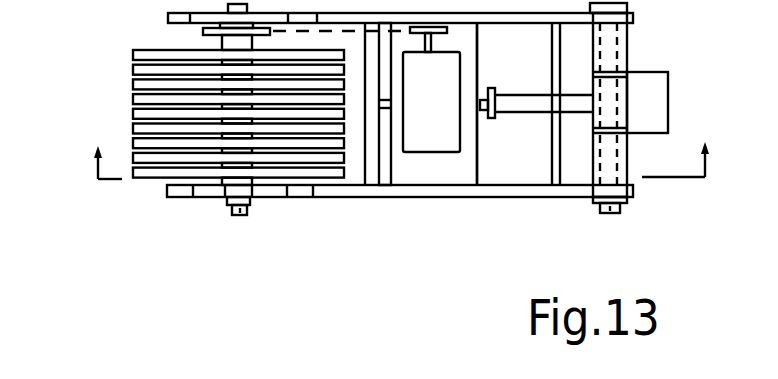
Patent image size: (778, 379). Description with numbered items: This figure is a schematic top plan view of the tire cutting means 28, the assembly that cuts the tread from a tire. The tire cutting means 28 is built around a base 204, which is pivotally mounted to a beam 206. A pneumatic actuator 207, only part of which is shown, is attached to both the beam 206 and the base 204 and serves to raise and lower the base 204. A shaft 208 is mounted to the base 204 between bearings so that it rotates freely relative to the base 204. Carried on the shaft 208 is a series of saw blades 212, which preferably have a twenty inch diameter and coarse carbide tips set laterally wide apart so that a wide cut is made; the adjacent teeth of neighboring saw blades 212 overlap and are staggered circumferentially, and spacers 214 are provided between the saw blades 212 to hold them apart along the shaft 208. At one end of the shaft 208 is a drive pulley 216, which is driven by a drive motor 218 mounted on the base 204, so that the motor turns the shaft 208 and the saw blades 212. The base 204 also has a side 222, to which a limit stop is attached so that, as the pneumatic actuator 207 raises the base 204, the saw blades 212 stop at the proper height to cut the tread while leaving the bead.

The tire cutting means 28 is at (277, 267).
The base 204 is at (492, 200).
The beam 206 is at (668, 88).
The pneumatic actuator 207 is at (537, 113).
The shaft 208 is at (234, 214).
The saw blades 212 is at (133, 63).
The spacers 214 is at (222, 150).
The drive pulley 216 is at (200, 34).
The drive motor 218 is at (410, 153).
The side 222 is at (513, 23).